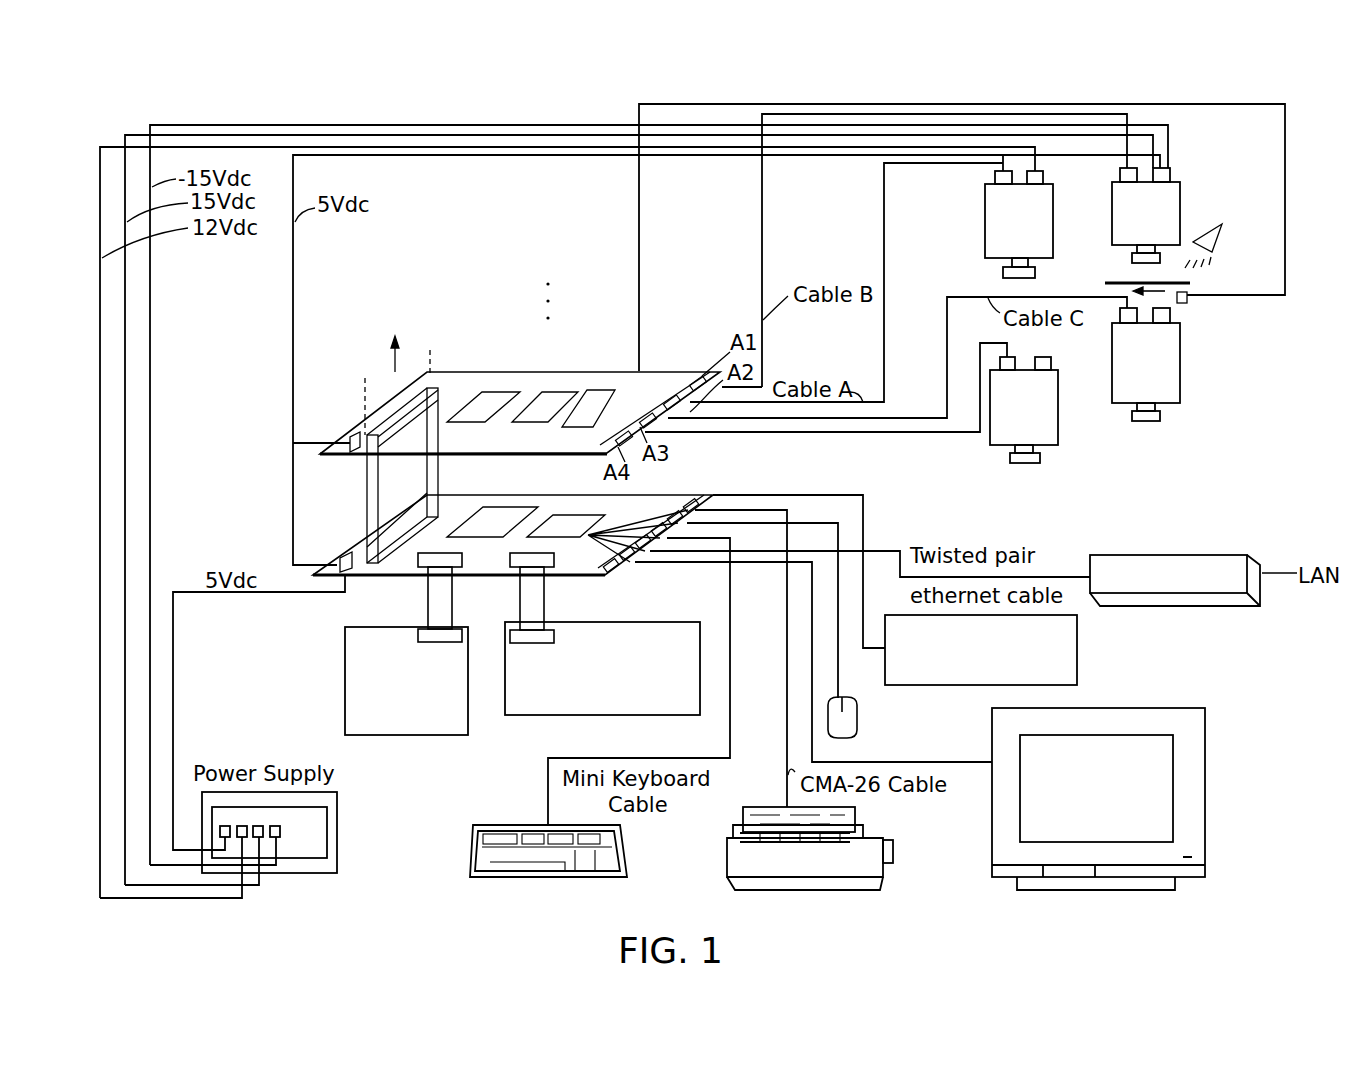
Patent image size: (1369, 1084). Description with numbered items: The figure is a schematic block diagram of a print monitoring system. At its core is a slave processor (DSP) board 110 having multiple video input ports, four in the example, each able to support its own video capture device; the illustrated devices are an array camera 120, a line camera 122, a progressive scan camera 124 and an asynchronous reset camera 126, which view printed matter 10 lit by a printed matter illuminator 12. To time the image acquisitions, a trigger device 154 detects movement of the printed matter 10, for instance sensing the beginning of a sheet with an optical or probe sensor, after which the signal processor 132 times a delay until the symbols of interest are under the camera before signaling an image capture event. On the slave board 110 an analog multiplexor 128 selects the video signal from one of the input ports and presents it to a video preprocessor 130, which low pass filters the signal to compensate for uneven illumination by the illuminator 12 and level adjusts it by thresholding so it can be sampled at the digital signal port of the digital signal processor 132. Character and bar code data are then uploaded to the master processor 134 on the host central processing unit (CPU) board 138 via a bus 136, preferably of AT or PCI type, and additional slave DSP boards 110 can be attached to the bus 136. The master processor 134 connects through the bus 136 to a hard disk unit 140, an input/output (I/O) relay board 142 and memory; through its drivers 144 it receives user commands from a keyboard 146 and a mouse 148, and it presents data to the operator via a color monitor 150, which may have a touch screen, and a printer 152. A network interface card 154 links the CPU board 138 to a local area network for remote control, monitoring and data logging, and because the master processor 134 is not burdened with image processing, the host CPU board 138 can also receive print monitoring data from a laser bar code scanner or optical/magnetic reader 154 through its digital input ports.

The printed matter 10 is at (1190, 283).
The printed matter illuminator 12 is at (1222, 240).
The slave processor (DSP) board 110 is at (442, 372).
The array camera 120 is at (985, 246).
The line camera 122 is at (1182, 228).
The progressive scan camera 124 is at (1005, 456).
The asynchronous reset camera 126 is at (1182, 345).
The analog multiplexor 128 is at (652, 388).
The video preprocessor 130 is at (570, 391).
The digital signal processor 132 is at (493, 392).
The master processor 134 is at (482, 522).
The bus 136 is at (364, 497).
The host central processing unit (CPU) board 138 is at (672, 494).
The hard disk unit 140 is at (455, 719).
The input/output (I/O) relay board 142 is at (612, 709).
The drivers 144 is at (568, 540).
The keyboard 146 is at (624, 893).
The mouse 148 is at (857, 702).
The color monitor 150 is at (1238, 826).
The printer 152 is at (893, 906).
The trigger device / network interface card / laser bar code scanner 154 is at (1068, 676).